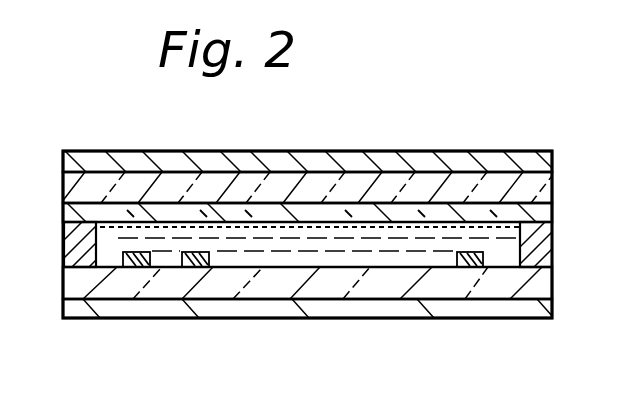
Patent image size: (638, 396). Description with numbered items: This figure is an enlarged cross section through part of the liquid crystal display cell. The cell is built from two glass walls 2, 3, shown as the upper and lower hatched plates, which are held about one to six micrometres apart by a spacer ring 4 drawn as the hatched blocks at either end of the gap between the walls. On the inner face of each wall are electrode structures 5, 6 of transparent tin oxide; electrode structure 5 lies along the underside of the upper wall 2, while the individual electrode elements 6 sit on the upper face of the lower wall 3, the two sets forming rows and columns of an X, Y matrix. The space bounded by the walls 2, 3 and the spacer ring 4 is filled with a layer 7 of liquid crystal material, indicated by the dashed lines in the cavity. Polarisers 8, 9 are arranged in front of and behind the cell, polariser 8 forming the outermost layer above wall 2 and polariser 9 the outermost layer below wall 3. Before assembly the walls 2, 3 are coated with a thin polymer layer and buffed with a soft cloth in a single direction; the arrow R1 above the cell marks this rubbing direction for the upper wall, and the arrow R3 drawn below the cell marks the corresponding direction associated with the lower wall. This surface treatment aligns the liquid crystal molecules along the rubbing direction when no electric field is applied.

The glass wall 2 is at (113, 172).
The glass wall 3 is at (202, 287).
The spacer ring 4 is at (548, 228).
The electrode structure 5 is at (467, 207).
The electrode structure 6 is at (103, 318).
The layer of liquid crystal material 7 is at (518, 224).
The polariser 8 is at (190, 158).
The polariser 9 is at (493, 306).
The rubbing direction R1 is at (352, 135).
The direction of radiation R3 is at (390, 337).